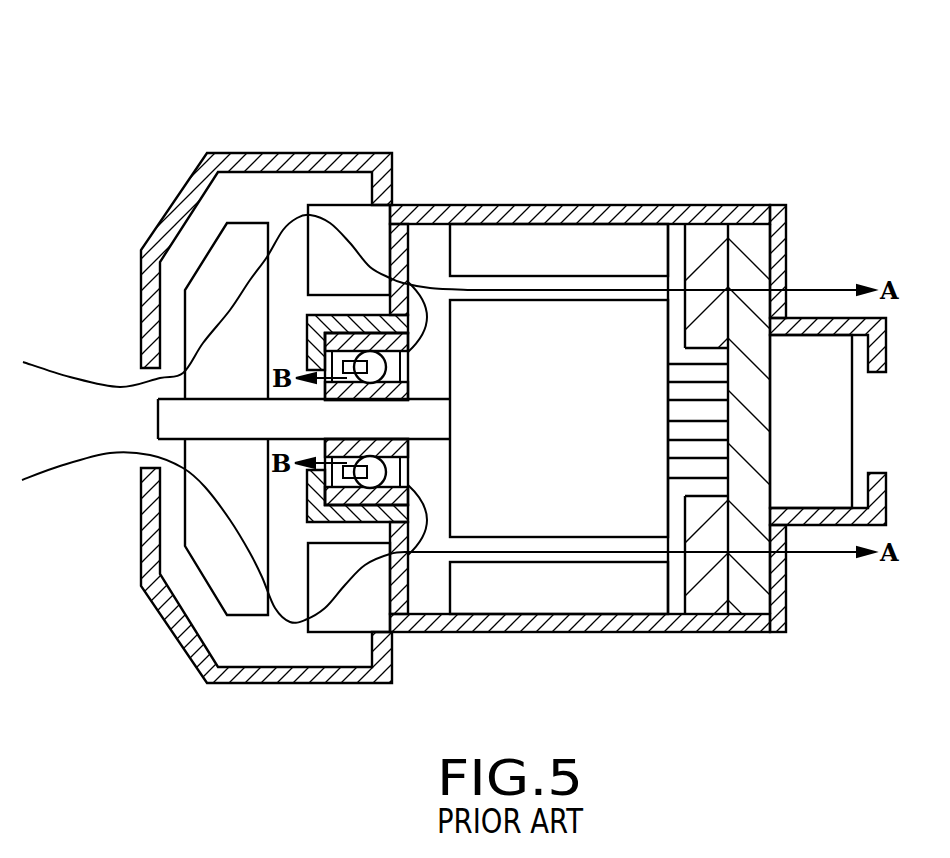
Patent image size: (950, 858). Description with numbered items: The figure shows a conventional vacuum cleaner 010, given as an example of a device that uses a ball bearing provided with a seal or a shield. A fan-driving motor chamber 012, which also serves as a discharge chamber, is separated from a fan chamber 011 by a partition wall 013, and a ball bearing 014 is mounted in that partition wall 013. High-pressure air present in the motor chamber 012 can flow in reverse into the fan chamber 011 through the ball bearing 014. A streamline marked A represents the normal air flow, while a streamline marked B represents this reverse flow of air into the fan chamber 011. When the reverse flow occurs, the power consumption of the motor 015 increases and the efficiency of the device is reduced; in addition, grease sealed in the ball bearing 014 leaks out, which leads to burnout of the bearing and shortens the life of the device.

The vacuum cleaner 010 is at (522, 150).
The fan chamber 011 is at (277, 190).
The fan-driving motor chamber 012 is at (677, 242).
The partition wall 013 is at (403, 590).
The ball bearing 014 is at (370, 378).
The motor 015 is at (568, 590).